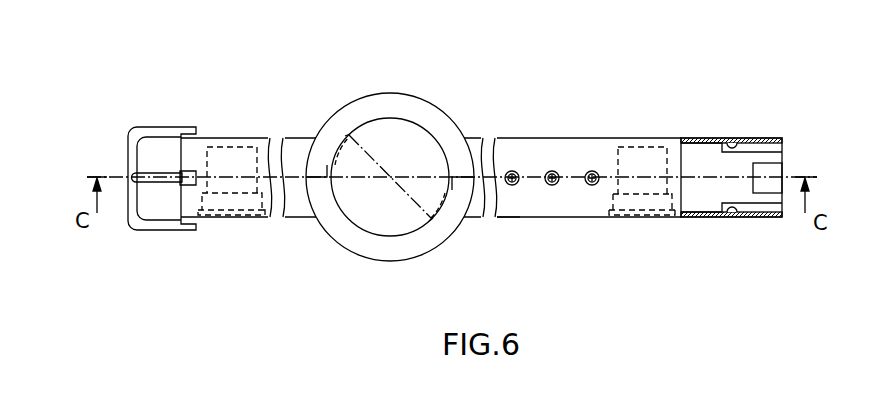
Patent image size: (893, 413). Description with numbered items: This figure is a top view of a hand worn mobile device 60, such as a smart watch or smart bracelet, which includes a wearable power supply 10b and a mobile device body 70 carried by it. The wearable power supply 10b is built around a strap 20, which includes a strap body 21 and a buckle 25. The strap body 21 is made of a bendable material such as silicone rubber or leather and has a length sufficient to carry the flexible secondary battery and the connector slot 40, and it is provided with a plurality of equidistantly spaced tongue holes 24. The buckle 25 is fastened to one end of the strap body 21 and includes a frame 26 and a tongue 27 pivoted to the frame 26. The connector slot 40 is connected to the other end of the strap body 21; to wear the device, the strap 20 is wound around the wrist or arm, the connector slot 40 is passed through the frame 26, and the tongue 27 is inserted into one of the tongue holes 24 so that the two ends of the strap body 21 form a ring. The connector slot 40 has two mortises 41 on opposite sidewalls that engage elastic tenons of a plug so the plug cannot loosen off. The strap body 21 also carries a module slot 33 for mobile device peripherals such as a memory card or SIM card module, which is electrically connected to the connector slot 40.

The wearable power supply 10b is at (570, 136).
The strap 20 is at (245, 137).
The strap body 21 is at (497, 219).
The tongue holes 24 is at (592, 186).
The buckle 25 is at (157, 135).
The frame 26 is at (147, 127).
The tongue 27 is at (150, 176).
The module slot 33 is at (620, 170).
The connector slot 40 is at (703, 138).
The mortises 41 is at (733, 213).
The hand worn mobile device 60 is at (388, 132).
The mobile device body 70 is at (440, 118).